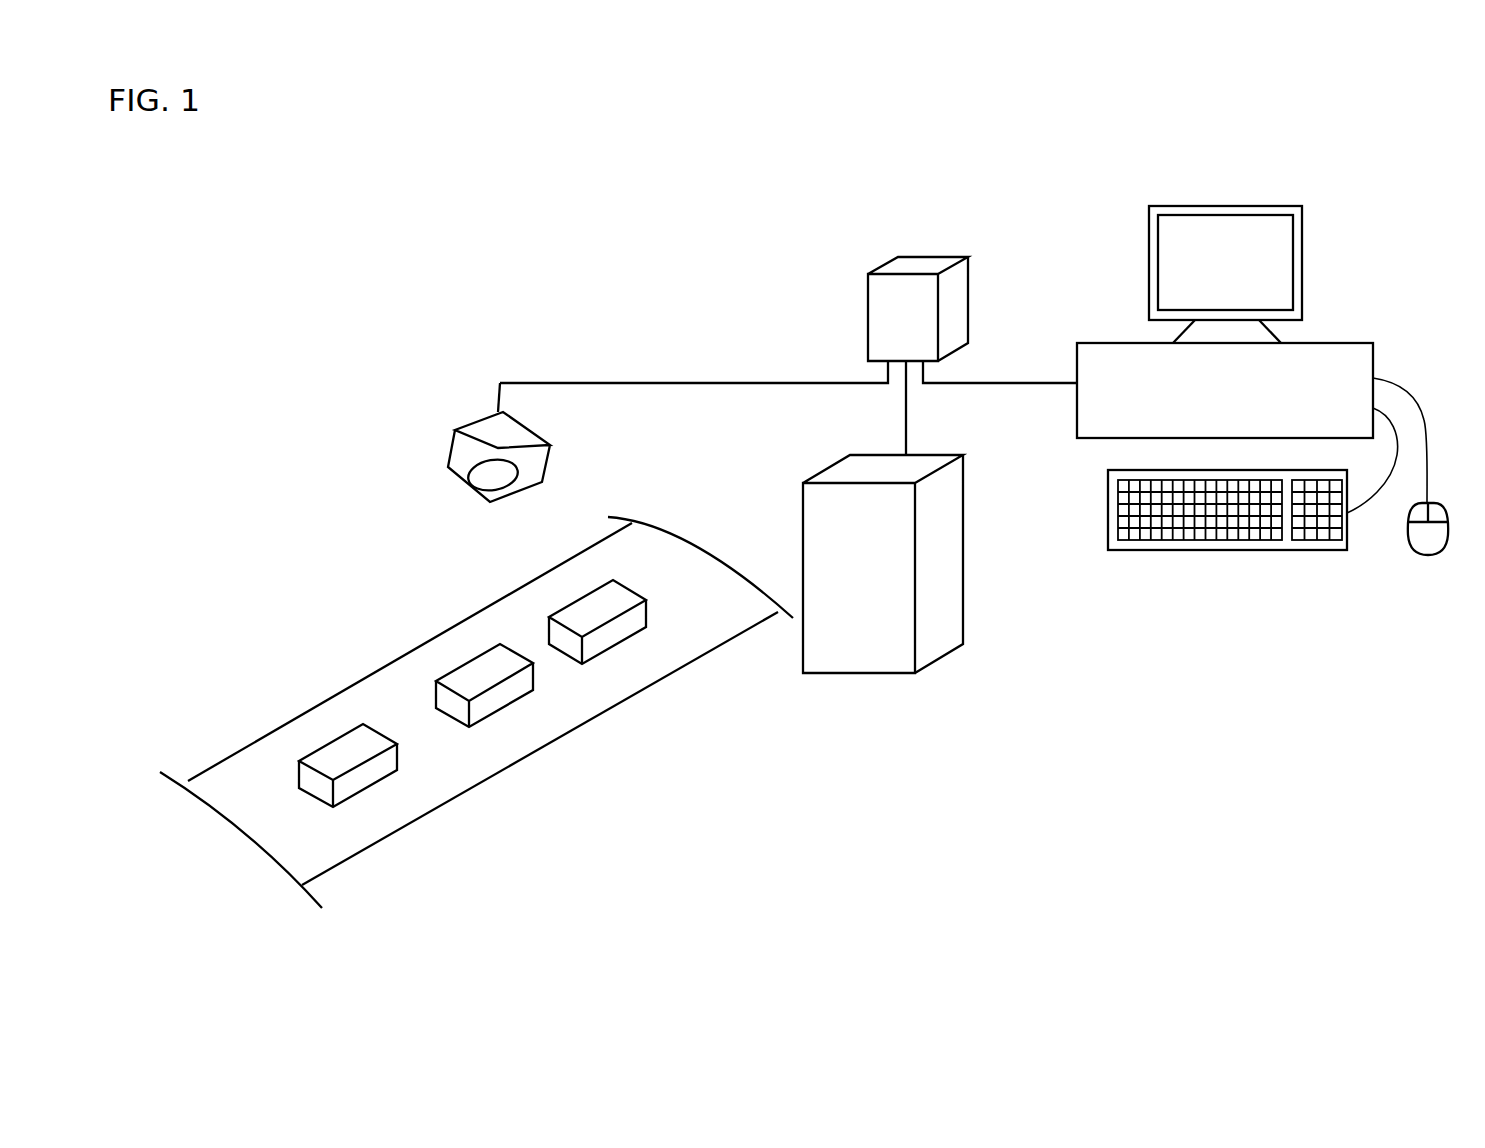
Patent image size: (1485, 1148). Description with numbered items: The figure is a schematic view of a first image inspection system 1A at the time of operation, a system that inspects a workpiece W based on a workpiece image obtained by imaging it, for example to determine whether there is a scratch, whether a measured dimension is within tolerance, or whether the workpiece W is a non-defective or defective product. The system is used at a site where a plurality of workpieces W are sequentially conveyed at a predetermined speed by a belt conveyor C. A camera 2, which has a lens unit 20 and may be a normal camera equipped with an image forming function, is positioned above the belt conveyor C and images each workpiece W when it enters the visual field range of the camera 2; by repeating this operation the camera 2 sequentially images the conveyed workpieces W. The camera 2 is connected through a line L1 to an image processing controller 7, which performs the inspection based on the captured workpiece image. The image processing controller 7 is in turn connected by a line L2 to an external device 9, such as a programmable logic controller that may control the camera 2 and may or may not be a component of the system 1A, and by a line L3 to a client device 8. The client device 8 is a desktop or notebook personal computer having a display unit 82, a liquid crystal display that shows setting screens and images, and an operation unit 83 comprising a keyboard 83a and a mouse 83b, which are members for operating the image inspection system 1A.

The first image inspection system 1A is at (818, 228).
The camera 2 is at (448, 449).
The lens unit 20 is at (487, 479).
The image processing controller 7 is at (935, 257).
The client device 8 is at (1356, 312).
The display unit 82 is at (1147, 243).
The operation unit 83 is at (1283, 544).
The keyboard 83a is at (1323, 555).
The mouse 83b is at (1414, 517).
The external device 9 is at (963, 623).
The communication line L1 is at (697, 383).
The communication line L2 is at (906, 428).
The communication line L3 is at (1040, 383).
The workpiece W is at (330, 739).
The belt conveyor C is at (537, 738).